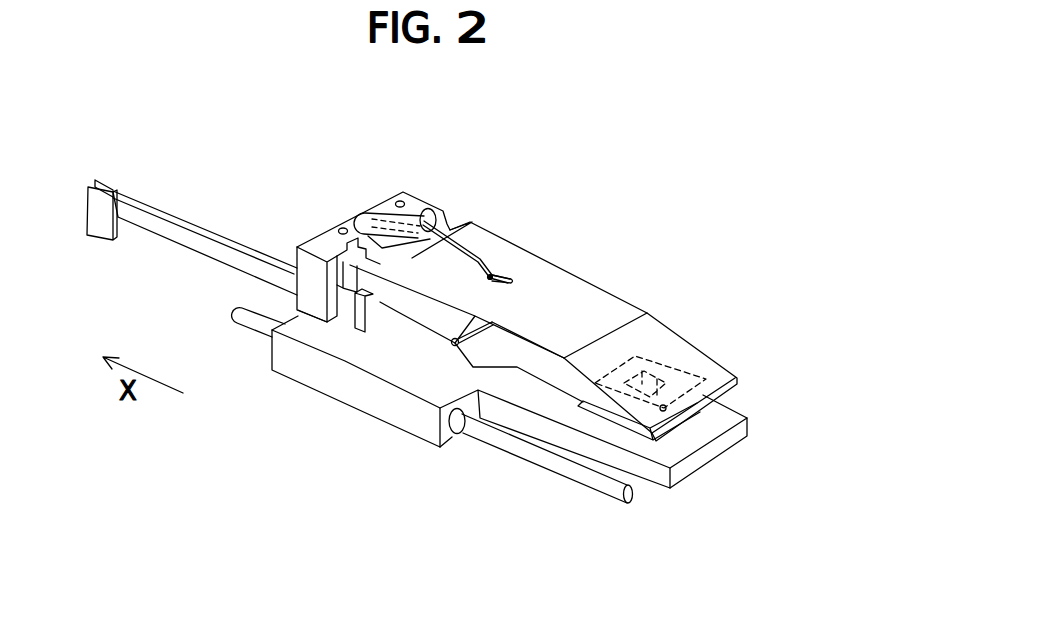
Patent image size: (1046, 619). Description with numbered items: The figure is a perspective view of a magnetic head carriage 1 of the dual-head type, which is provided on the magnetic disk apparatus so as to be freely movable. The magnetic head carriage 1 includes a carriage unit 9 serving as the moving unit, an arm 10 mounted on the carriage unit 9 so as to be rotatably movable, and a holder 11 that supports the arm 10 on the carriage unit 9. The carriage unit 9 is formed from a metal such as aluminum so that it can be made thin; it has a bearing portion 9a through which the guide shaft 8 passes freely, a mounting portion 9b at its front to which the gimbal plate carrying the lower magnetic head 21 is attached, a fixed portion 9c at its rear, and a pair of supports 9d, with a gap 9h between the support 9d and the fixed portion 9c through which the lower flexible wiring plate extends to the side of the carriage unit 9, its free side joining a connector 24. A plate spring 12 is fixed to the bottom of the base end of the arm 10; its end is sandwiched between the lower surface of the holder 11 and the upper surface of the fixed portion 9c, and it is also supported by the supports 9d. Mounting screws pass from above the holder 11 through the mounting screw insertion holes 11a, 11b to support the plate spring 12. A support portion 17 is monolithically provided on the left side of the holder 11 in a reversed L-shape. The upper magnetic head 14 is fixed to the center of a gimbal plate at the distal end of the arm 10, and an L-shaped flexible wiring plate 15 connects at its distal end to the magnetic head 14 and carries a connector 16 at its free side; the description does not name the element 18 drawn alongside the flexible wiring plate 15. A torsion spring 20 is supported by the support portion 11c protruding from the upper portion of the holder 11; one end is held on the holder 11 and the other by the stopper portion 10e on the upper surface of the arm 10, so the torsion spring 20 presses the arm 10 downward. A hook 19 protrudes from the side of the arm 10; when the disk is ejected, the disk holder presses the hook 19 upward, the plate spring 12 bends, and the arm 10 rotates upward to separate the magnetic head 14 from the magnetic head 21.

The magnetic head carriage 1 is at (573, 125).
The guide shaft 8 is at (554, 461).
The carriage unit 9 is at (732, 470).
The bearing portion 9a is at (378, 398).
The mounting portion 9b is at (669, 452).
The fixed portion 9c is at (395, 298).
The support 9d is at (363, 331).
The gap 9h is at (293, 379).
The arm 10 is at (598, 296).
The stopper portion 10e is at (500, 277).
The holder 11 is at (444, 204).
The mounting screw insertion hole 11a is at (344, 227).
The mounting screw insertion hole 11b is at (401, 201).
The support portion 11c is at (412, 252).
The plate spring 12 is at (392, 300).
The magnetic head 14 is at (708, 346).
The flexible wiring plate 15 is at (213, 254).
The connector 16 is at (100, 243).
The support portion 17 is at (302, 266).
The arm top strip 18 is at (210, 230).
The hook 19 is at (445, 335).
The torsion spring 20 is at (475, 253).
The magnetic head 21 is at (705, 413).
The connector 24 is at (112, 190).